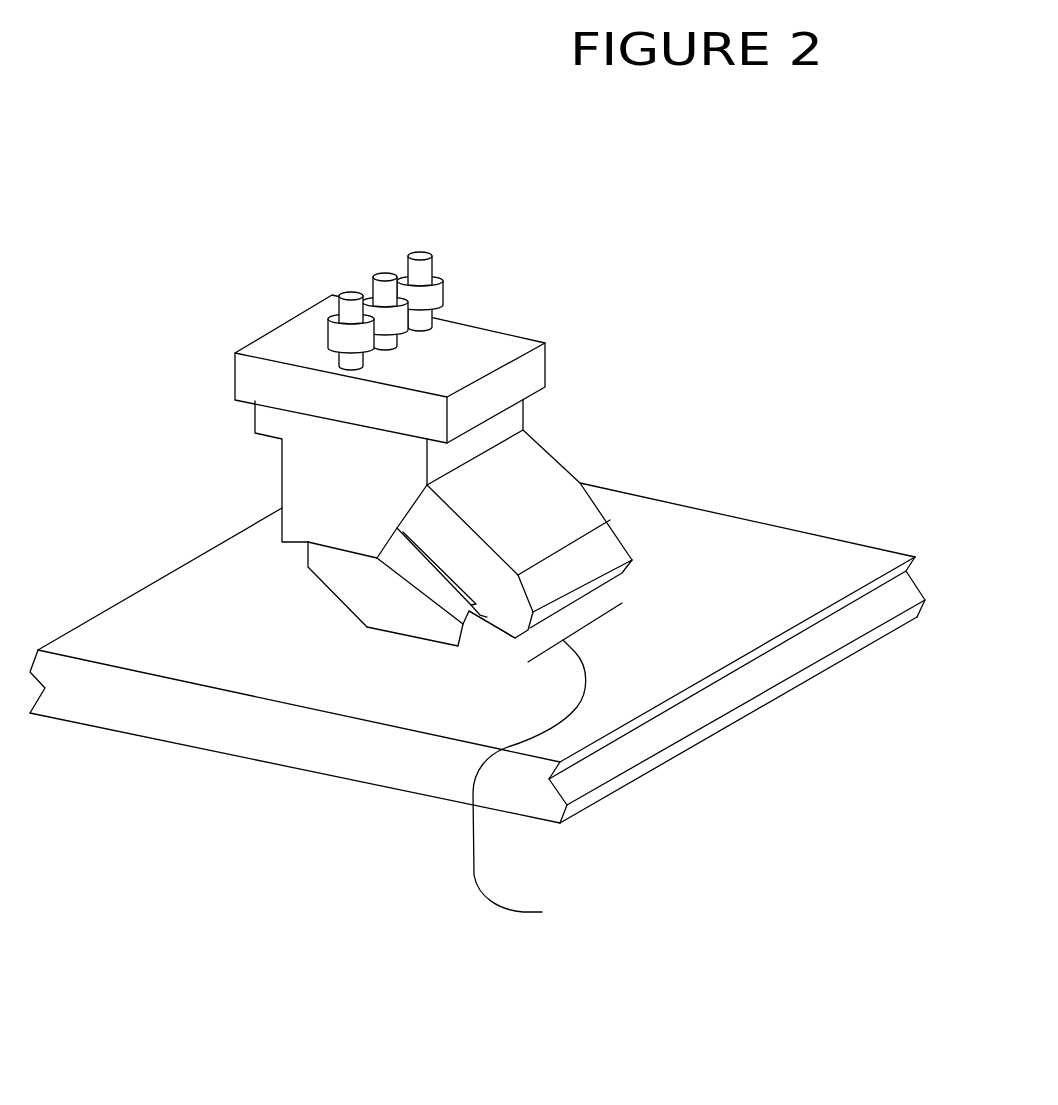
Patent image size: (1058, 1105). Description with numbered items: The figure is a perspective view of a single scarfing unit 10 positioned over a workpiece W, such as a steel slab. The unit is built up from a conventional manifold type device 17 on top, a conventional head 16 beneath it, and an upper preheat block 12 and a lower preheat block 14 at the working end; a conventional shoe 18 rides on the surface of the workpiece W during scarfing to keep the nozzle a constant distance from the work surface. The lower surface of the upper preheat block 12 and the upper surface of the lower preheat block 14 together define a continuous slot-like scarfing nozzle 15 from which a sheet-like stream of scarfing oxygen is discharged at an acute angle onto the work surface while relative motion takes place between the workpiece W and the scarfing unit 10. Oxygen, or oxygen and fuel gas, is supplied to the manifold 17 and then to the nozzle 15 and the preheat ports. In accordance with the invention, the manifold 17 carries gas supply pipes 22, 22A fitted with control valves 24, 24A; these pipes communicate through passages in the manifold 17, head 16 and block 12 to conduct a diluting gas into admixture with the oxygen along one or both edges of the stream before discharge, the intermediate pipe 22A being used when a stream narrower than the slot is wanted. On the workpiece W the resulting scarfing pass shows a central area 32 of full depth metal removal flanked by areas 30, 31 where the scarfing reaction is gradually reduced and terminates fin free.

The scarfing unit 10 is at (438, 467).
The upper preheat block 12 is at (572, 572).
The lower preheat block 14 is at (430, 595).
The scarfing nozzle 15 is at (425, 552).
The head 16 is at (290, 465).
The manifold type device 17 is at (247, 374).
The shoe 18 is at (358, 587).
The gas supply pipe 22 is at (337, 363).
The gas supply pipe 22A is at (446, 298).
The control valve 24 is at (440, 277).
The control valve 24A is at (370, 297).
The area of reduced scarfing reaction 30 is at (540, 590).
The area of reduced scarfing reaction 31 is at (614, 550).
The area of full depth removal 32 is at (573, 568).
The workpiece W is at (680, 683).